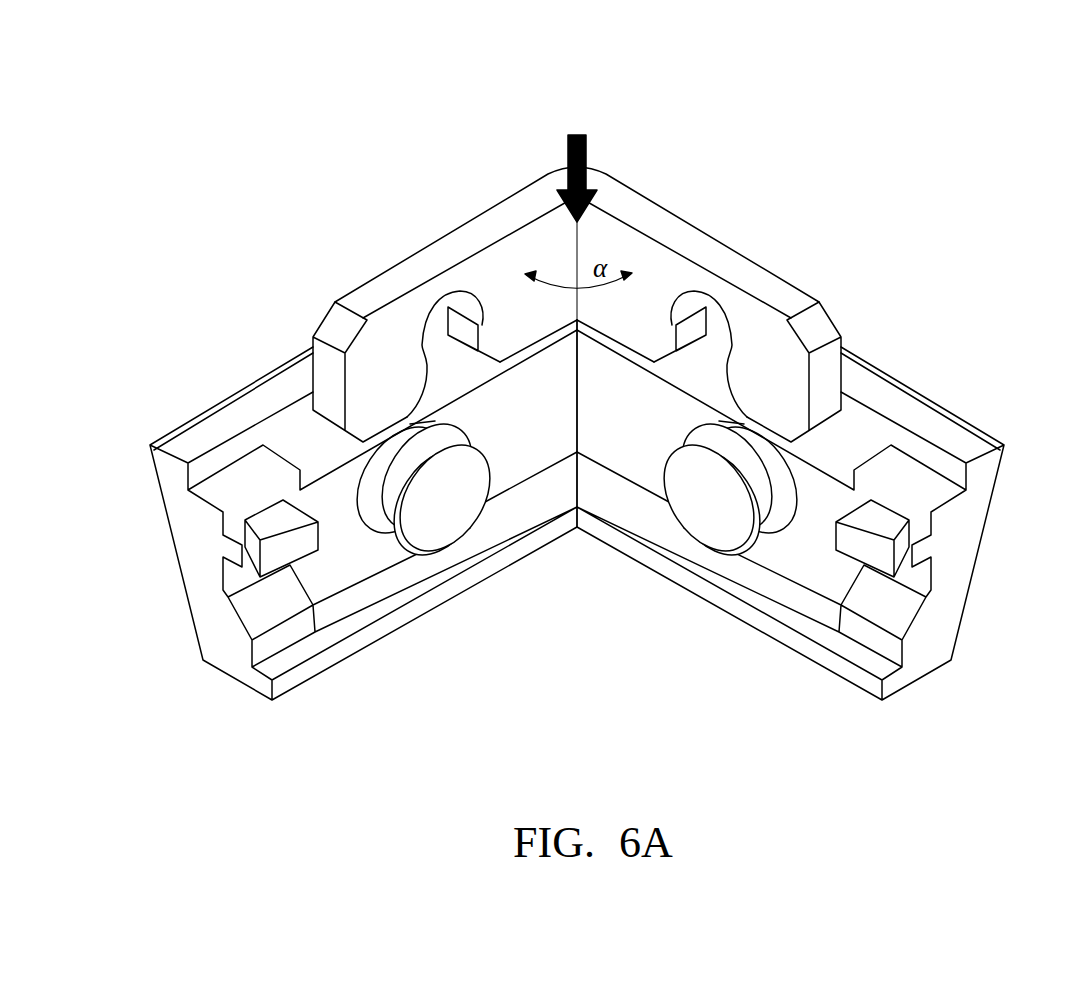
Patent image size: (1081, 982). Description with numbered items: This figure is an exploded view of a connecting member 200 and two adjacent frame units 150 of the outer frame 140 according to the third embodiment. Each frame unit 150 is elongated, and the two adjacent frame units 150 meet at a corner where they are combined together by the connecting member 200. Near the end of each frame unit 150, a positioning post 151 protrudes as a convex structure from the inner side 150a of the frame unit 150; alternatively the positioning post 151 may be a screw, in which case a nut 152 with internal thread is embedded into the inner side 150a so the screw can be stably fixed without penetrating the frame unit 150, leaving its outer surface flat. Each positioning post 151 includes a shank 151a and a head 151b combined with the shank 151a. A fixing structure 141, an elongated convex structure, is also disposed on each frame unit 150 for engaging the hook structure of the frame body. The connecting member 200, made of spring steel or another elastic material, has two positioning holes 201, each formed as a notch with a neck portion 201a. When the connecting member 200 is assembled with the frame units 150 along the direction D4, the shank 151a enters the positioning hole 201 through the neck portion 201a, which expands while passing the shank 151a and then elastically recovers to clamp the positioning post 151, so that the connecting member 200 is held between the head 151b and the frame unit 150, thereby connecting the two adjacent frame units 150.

The outer frame 140 is at (594, 508).
The frame unit 150 is at (222, 423).
The inner side of the frame unit 150a is at (537, 437).
The fixing structure 141 is at (273, 557).
The positioning post 151 is at (577, 579).
The shank 151a is at (368, 520).
The head 151b is at (452, 520).
The nut 152 is at (362, 530).
The connecting member 200 is at (612, 265).
The positioning hole 201 is at (448, 304).
The neck portion 201a is at (430, 340).
The direction D4 is at (577, 130).